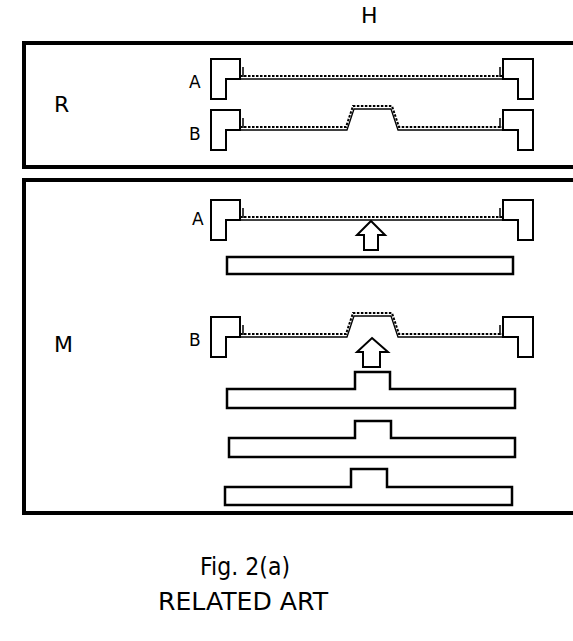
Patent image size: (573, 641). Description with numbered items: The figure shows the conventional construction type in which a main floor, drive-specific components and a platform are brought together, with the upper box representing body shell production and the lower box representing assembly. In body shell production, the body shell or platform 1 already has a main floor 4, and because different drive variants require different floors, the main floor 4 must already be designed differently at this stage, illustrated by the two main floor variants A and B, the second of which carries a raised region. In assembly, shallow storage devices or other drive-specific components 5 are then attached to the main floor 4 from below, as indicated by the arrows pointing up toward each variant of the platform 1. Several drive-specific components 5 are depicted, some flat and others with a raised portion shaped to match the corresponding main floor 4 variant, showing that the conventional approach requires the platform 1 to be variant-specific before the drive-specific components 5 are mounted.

The platform 1 is at (222, 67).
The main floor 4 is at (458, 77).
The drive-specific components 5 is at (237, 265).